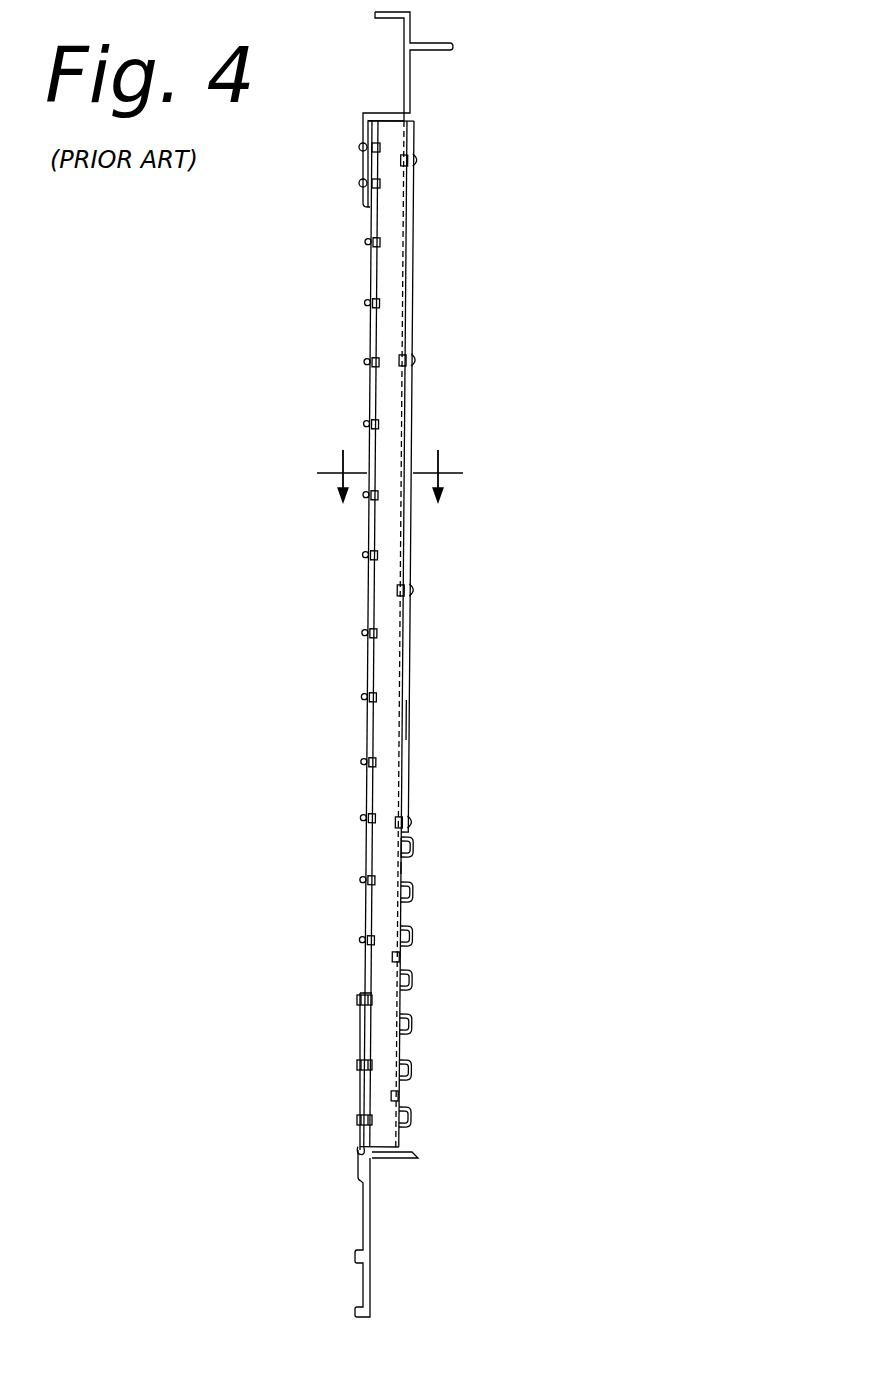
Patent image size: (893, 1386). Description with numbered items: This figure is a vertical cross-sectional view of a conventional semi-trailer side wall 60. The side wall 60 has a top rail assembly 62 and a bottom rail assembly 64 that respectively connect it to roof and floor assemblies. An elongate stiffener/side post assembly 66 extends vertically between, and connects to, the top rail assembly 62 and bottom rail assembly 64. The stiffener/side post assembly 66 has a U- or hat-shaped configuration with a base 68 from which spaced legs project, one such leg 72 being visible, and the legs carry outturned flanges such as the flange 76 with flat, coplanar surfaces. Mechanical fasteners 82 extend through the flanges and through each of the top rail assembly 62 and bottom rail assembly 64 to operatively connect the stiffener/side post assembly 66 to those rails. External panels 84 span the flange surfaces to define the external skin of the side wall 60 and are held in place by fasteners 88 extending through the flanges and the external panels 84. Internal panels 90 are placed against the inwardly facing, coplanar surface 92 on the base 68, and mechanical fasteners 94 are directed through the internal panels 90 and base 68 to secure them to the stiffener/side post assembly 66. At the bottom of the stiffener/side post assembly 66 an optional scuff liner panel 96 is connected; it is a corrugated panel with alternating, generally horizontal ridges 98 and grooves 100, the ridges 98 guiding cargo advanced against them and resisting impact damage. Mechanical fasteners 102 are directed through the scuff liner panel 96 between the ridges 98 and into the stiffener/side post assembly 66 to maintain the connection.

The side wall 60 is at (440, 187).
The top rail assembly 62 is at (408, 31).
The bottom rail assembly 64 is at (370, 1238).
The stiffener/side post assembly 66 is at (407, 292).
The base 68 is at (408, 690).
The leg 72 is at (387, 570).
The outturned flange 76 is at (375, 525).
The mechanical fasteners 82 is at (362, 147).
The external panels 84 is at (367, 658).
The fasteners 88 is at (368, 242).
The internal panels 90 is at (414, 415).
The inwardly facing coplanar surface 92 is at (407, 720).
The mechanical fasteners 94 is at (418, 162).
The scuff liner panel 96 is at (411, 887).
The ridges 98 is at (410, 840).
The grooves 100 is at (407, 868).
The mechanical fasteners 102 is at (401, 957).